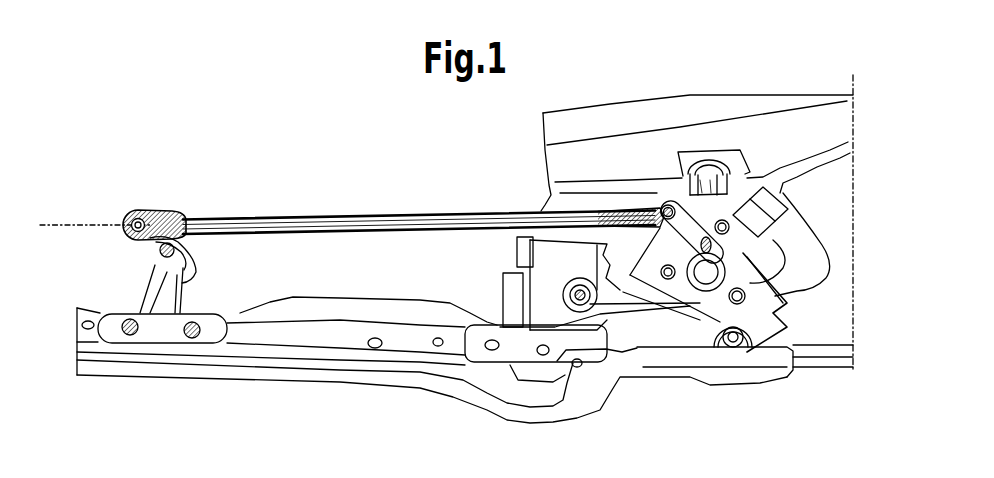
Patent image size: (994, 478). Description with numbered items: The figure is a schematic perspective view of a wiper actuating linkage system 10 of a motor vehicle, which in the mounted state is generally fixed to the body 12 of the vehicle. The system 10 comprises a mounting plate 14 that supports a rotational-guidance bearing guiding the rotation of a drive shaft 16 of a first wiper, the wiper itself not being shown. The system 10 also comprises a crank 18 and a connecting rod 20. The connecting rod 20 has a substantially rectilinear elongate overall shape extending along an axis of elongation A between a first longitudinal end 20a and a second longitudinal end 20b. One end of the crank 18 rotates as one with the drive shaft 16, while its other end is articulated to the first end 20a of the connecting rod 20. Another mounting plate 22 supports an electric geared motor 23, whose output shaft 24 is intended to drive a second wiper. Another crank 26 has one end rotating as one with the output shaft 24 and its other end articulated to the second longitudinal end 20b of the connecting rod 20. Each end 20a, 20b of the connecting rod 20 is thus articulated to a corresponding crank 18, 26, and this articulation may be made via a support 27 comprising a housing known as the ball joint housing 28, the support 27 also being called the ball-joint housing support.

The wiper actuating linkage system 10 is at (402, 178).
The body 12 is at (293, 373).
The mounting plate 14 is at (160, 322).
The drive shaft 16 is at (193, 248).
The crank 18 is at (145, 262).
The connecting rod 20 is at (354, 205).
The first longitudinal end 20a is at (158, 210).
The second longitudinal end 20b is at (640, 208).
The mounting plate 22 is at (640, 307).
The electric geared motor 23 is at (792, 304).
The output shaft 24 is at (760, 250).
The crank 26 is at (708, 245).
The support 27 is at (135, 192).
The ball joint housing 28 is at (137, 207).
The axis of elongation A is at (50, 225).